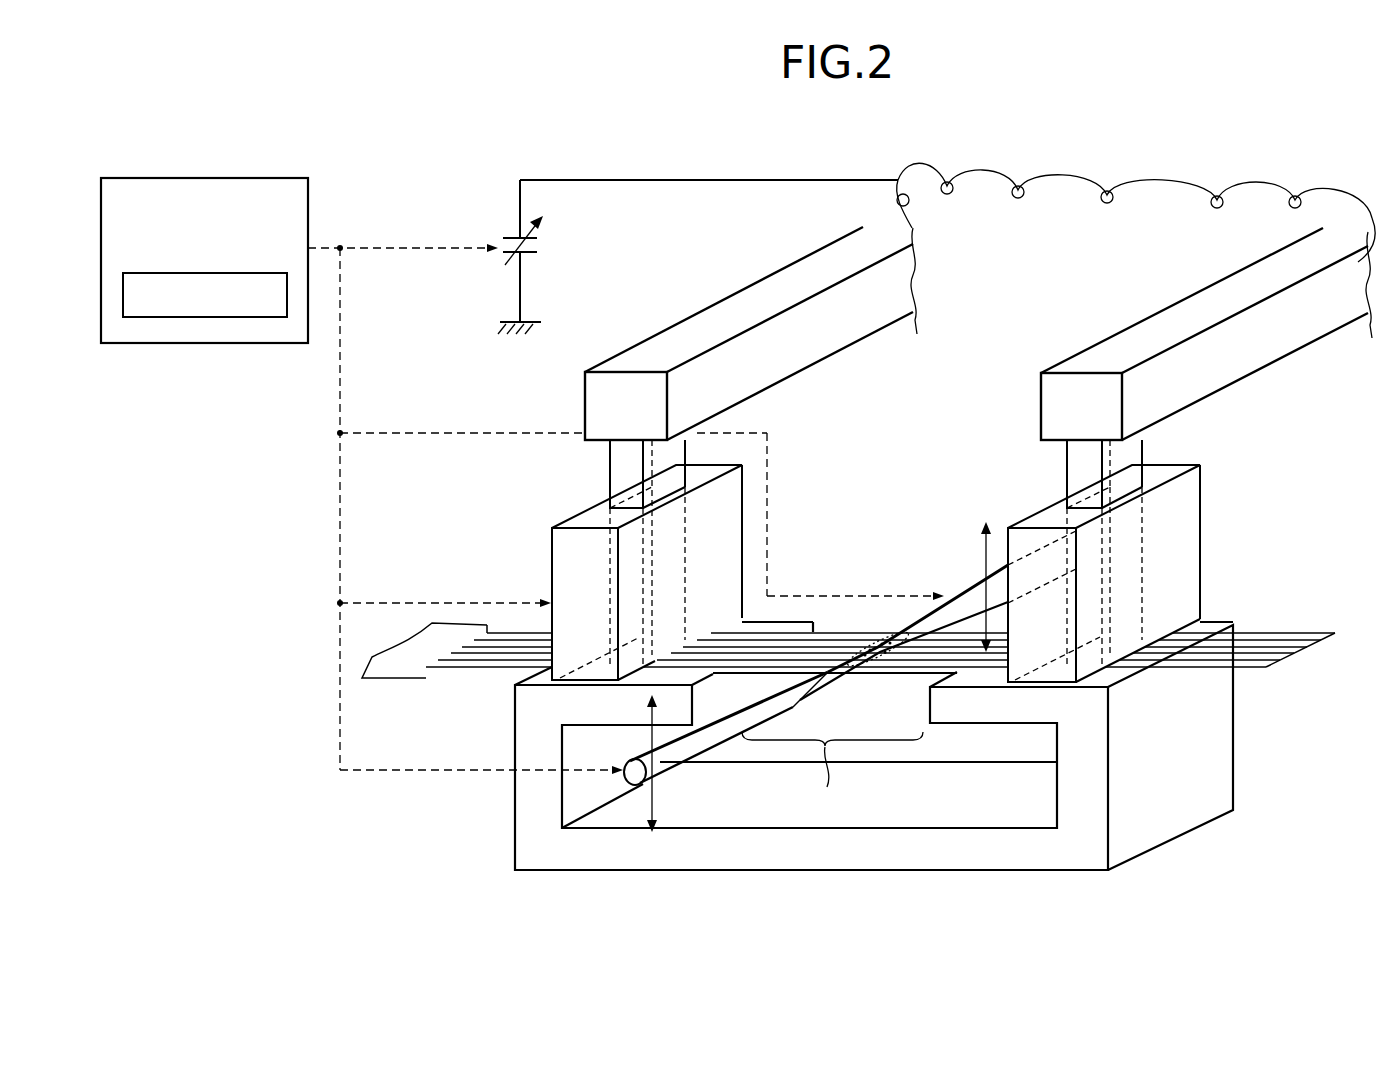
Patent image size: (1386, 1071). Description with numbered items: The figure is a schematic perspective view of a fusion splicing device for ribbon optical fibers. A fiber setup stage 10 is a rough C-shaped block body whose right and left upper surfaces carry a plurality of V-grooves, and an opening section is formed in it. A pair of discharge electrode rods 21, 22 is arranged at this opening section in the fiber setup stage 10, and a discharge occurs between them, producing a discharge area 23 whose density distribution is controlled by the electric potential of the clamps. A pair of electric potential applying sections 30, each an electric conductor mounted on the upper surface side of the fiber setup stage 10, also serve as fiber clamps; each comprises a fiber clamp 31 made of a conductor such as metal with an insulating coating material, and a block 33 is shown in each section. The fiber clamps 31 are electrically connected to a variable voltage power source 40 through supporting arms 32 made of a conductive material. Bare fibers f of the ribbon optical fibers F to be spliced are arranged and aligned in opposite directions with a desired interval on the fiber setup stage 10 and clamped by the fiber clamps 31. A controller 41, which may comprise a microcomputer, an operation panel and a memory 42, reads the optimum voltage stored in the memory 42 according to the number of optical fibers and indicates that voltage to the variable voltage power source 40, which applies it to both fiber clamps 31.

The fiber setup stage 10 is at (782, 870).
The electrode rod 21 is at (727, 735).
The electrode rod 22 is at (960, 592).
The discharge area 23 is at (876, 633).
The electric potential applying section 30 is at (877, 556).
The fiber clamp 31 is at (608, 473).
The supporting arm 32 is at (692, 312).
The pressing block 33 is at (492, 456).
The variable voltage power source 40 is at (500, 230).
The controller 41 is at (262, 178).
The memory 42 is at (153, 317).
The ribbon optical fiber F is at (455, 668).
The bare fiber f is at (840, 632).